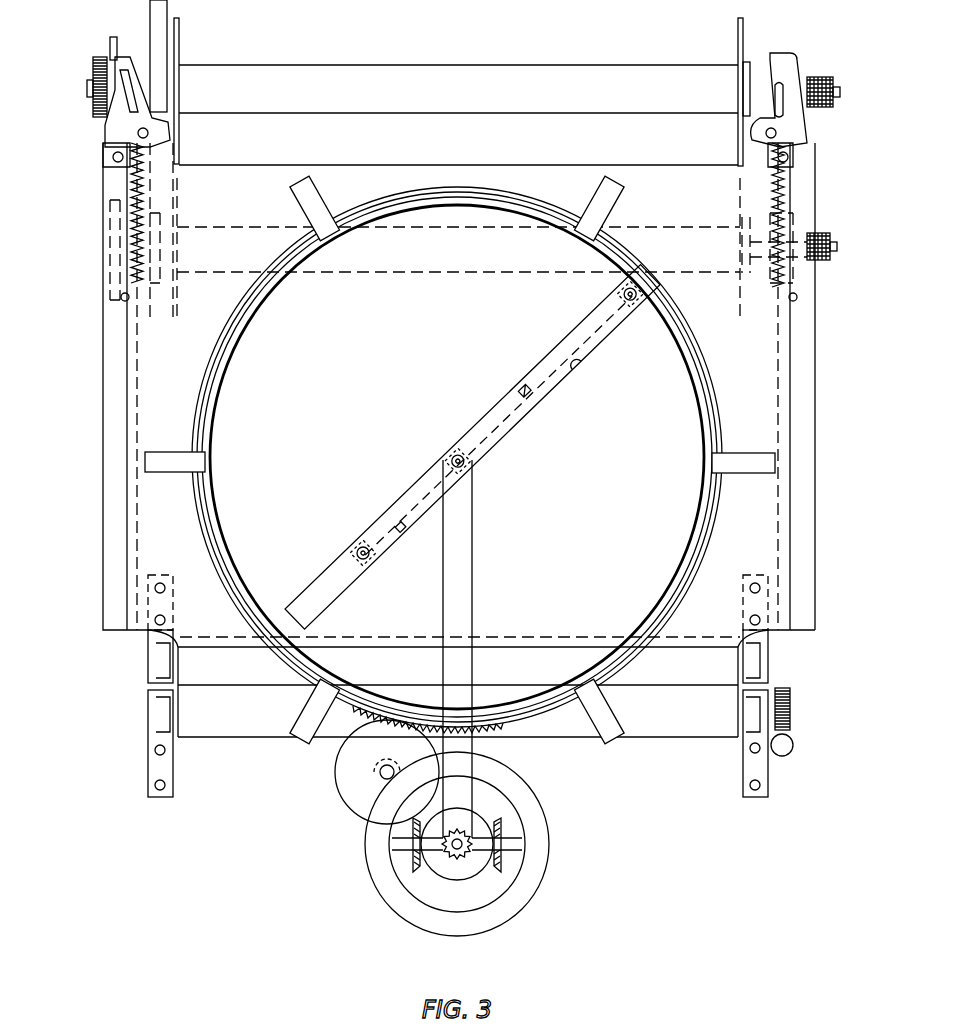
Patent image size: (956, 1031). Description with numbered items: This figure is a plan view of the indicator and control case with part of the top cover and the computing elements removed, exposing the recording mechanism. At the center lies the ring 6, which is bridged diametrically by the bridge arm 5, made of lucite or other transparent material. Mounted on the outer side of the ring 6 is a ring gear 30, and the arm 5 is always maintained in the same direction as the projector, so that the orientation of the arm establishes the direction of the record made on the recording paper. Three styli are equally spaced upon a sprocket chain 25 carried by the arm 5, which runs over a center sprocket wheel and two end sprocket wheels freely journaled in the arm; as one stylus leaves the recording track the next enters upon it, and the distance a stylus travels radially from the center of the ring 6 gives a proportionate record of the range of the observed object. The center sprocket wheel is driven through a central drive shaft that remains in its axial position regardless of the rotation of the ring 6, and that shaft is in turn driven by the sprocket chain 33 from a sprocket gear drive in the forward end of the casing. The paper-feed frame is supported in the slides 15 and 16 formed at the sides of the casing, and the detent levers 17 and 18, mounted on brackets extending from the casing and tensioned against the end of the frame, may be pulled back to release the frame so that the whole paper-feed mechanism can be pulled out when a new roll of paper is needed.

The bridge arm 5 is at (475, 417).
The ring 6 is at (237, 347).
The slide 15 is at (778, 508).
The slide 16 is at (137, 413).
The detent lever 17 is at (792, 118).
The detent lever 18 is at (113, 128).
The sprocket chain 25 is at (563, 347).
The ring gear 30 is at (363, 717).
The sprocket chain 33 is at (473, 545).